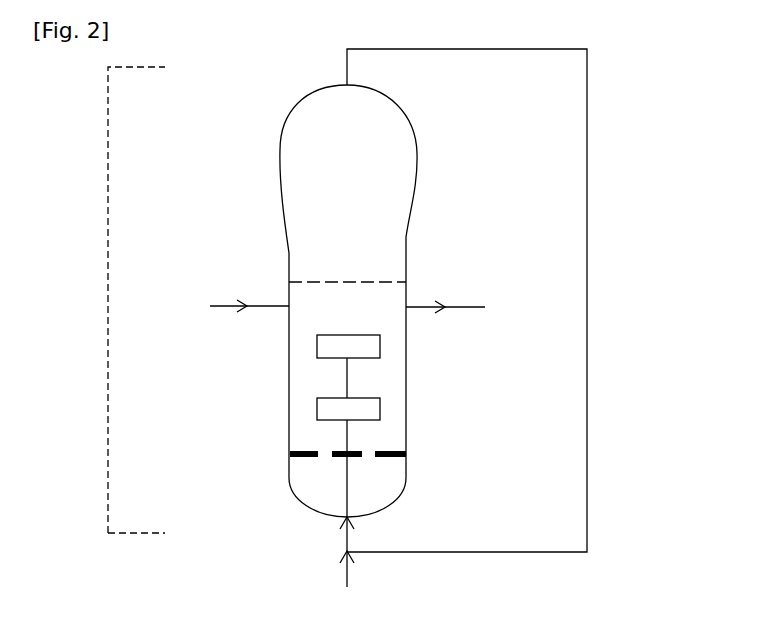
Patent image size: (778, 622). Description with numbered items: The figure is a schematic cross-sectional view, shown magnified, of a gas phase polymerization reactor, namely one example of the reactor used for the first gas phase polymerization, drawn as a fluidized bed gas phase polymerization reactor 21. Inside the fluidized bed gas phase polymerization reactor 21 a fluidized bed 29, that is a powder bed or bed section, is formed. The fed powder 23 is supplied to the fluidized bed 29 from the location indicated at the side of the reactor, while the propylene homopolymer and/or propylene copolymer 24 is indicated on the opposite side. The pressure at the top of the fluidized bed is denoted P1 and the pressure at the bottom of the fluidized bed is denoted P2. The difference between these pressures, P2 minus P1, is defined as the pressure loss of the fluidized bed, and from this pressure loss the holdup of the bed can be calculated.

The fluidized bed gas phase polymerization reactor 21 is at (108, 122).
The fed powder 23 is at (230, 309).
The propylene homopolymer (I-1) and/or propylene copolymer (I-2) 24 is at (465, 310).
The fluidized bed 29 is at (378, 305).
The pressure at top of the fluidized bed P1 is at (315, 157).
The pressure at bottom of the fluidized bed P2 is at (317, 480).